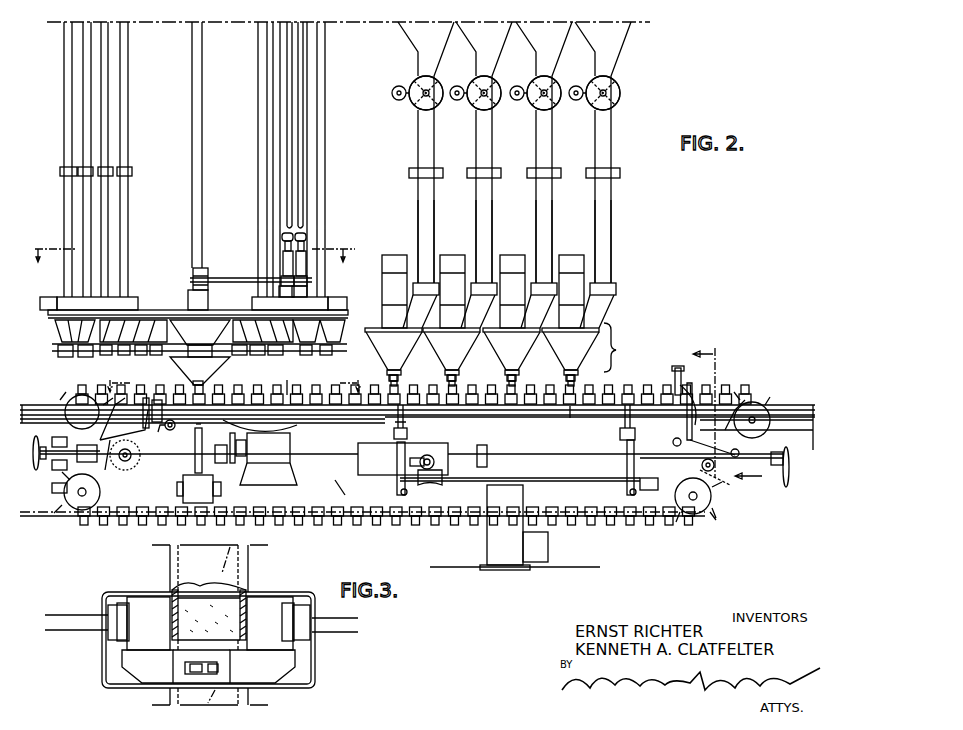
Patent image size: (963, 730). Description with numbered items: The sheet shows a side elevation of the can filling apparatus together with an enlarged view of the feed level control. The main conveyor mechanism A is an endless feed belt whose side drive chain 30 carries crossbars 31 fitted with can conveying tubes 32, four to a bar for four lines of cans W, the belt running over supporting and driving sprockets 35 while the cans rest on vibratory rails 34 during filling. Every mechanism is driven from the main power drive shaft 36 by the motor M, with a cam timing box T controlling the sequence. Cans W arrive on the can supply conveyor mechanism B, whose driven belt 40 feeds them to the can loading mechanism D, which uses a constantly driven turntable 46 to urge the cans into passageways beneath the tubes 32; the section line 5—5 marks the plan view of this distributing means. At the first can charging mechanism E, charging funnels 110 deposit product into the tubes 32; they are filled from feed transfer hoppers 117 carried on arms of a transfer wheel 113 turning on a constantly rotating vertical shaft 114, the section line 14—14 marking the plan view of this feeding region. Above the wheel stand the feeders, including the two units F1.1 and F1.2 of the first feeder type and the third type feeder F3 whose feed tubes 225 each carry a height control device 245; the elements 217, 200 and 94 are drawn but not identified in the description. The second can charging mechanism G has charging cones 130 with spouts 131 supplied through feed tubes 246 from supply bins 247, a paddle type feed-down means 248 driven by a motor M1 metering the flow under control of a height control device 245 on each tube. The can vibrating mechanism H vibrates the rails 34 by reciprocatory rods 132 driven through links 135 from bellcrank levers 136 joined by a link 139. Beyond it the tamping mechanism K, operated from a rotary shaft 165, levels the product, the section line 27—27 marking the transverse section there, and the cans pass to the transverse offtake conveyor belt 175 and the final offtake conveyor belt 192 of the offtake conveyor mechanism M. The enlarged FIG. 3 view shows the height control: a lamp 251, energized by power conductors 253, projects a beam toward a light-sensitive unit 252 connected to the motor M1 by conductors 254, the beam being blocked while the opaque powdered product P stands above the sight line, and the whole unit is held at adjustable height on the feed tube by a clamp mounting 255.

In FIG. 2, the standard column 217 is at (191, 97).
In FIG. 2, the height control device 245 is at (123, 167).
In FIG. 2, the feed tubes 225 is at (105, 218).
In FIG. 2, the frame columns 200 is at (320, 188).
In FIG. 2, the vertical shaft 114 is at (200, 268).
In FIG. 2, the third type feeder F3 is at (44, 297).
In FIG. 2, the first feeder unit F1.1 is at (256, 299).
In FIG. 2, the first feeder unit F1.2 is at (345, 288).
In FIG. 2, the section line 14— 14 is at (191, 245).
In FIG. 2, the feed transfer hoppers 117 is at (80, 330).
In FIG. 2, the transfer wheel 113 is at (56, 347).
In FIG. 2, the charging funnels 110 is at (200, 371).
In FIG. 2, the first can charging mechanism E is at (212, 384).
In FIG. 2, the can conveying tubes 32 is at (80, 514).
In FIG. 2, the can supply conveyor mechanism B is at (40, 410).
In FIG. 2, the vibratory rails 34 is at (540, 414).
In FIG. 2, the cans W is at (430, 399).
In FIG. 2, the section line 5— 5 is at (231, 378).
In FIG. 2, the can loading mechanism D is at (147, 392).
In FIG. 2, the sprockets 35 is at (70, 398).
In FIG. 2, the driven belt 40 is at (30, 440).
In FIG. 2, the main power drive shaft 36 is at (183, 455).
In FIG. 2, the cam gear 94 is at (128, 465).
In FIG. 2, the turntable 46 is at (290, 425).
In FIG. 2, the cam timing box T is at (432, 445).
In FIG. 2, the vertical reciprocatory rods 132 is at (404, 440).
In FIG. 2, the links 135 is at (397, 478).
In FIG. 2, the can vibrating mechanism H is at (426, 460).
In FIG. 2, the bellcrank levers 136 is at (402, 492).
In FIG. 2, the link 139 is at (552, 478).
In FIG. 2, the main conveyor mechanism A is at (342, 480).
In FIG. 2, the crossbars 31 is at (418, 518).
In FIG. 2, the drive chain 30 is at (660, 518).
In FIG. 2, the motor M is at (797, 402).
In FIG. 2, the supply bins 247 is at (410, 30).
In FIG. 2, the motor M1 is at (396, 86).
In FIG. 2, the feed-down means 248 is at (470, 106).
In FIG. 2, the feed tubes 246 is at (470, 236).
In FIG. 2, the charging cones 130 is at (404, 353).
In FIG. 2, the spout 131 is at (398, 383).
In FIG. 2, the second can charging mechanism G is at (614, 347).
In FIG. 2, the product tamping mechanism K is at (670, 368).
In FIG. 2, the section line 27— 27 is at (728, 417).
In FIG. 2, the transverse offtake conveyor belt 175 is at (676, 445).
In FIG. 2, the rotary shaft 165 is at (702, 466).
In FIG. 2, the final longitudinal offtake conveyor belt 192 is at (789, 447).
In FIG. 3, the powdered product P is at (185, 590).
In FIG. 3, the lamp 251 is at (265, 605).
In FIG. 3, the conductors 254 is at (62, 630).
In FIG. 3, the power conductors 253 is at (328, 632).
In FIG. 3, the light-sensitive unit 252 is at (150, 638).
In FIG. 3, the clamp mounting 255 is at (255, 675).